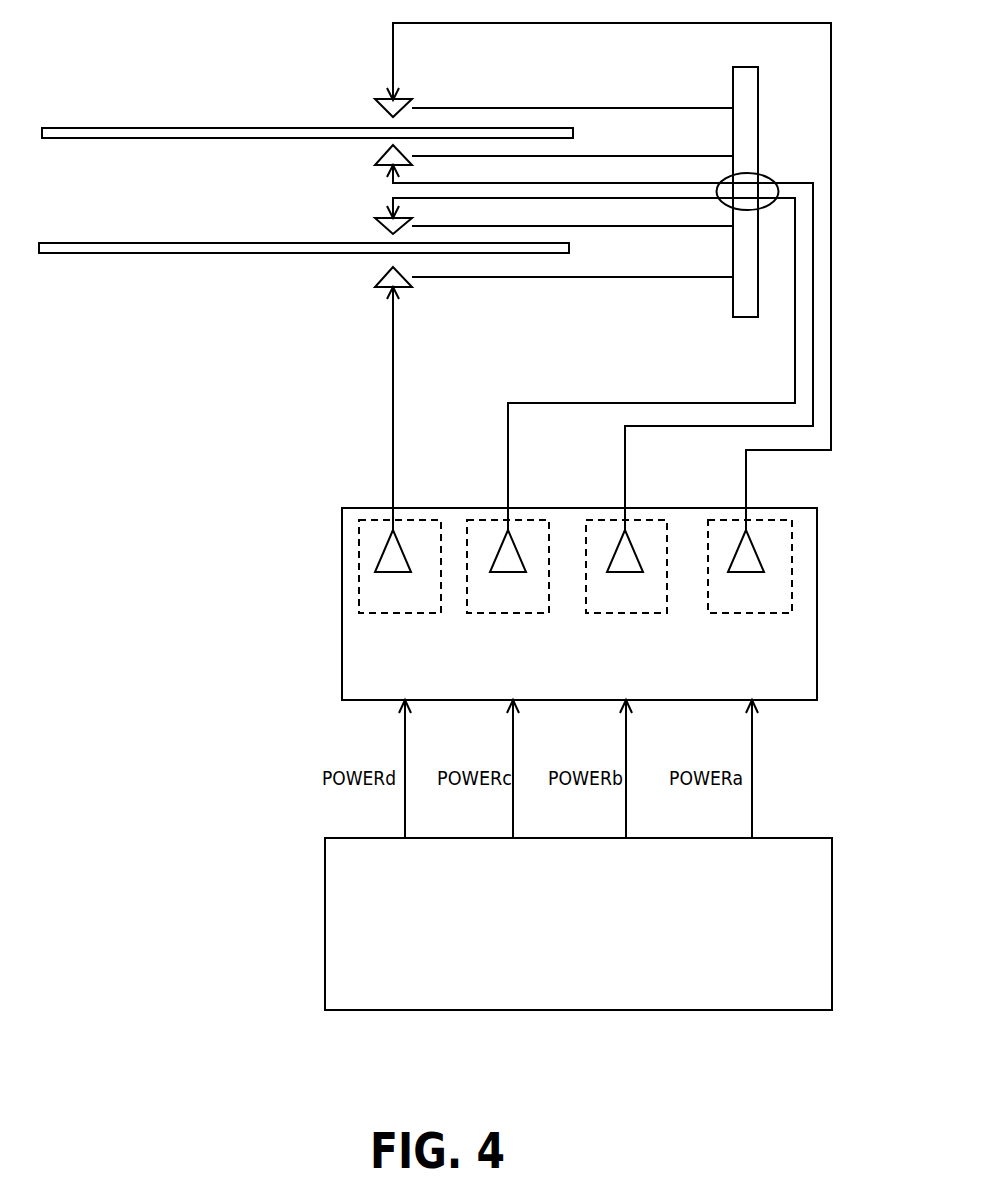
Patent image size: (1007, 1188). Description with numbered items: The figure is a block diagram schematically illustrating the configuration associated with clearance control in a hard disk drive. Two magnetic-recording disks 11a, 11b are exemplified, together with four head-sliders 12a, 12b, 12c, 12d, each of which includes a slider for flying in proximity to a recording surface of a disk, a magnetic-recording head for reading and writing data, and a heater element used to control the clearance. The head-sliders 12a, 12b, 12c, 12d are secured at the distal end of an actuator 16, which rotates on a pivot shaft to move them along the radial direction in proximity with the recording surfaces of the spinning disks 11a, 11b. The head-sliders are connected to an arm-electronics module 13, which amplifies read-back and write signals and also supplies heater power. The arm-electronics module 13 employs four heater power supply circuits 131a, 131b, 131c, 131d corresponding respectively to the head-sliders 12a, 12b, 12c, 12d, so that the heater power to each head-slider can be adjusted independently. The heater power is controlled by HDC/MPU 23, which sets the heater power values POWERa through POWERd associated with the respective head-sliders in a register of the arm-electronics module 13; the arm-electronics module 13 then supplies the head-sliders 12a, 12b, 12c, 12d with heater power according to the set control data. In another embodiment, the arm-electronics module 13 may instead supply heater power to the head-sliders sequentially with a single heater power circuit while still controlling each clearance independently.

The magnetic-recording disk 11a is at (165, 127).
The magnetic-recording disk 11b is at (170, 242).
The head-slider 12a is at (380, 108).
The head-slider 12b is at (378, 153).
The head-slider 12c is at (378, 227).
The head-slider 12d is at (378, 275).
The actuator 16 is at (733, 87).
The arm-electronics (AE) module 13 is at (800, 691).
The heater power supply circuit 131a is at (730, 613).
The heater power supply circuit 131b is at (628, 613).
The heater power supply circuit 131c is at (508, 613).
The heater power supply circuit 131d is at (430, 613).
The HDC/MPU 23 is at (782, 988).